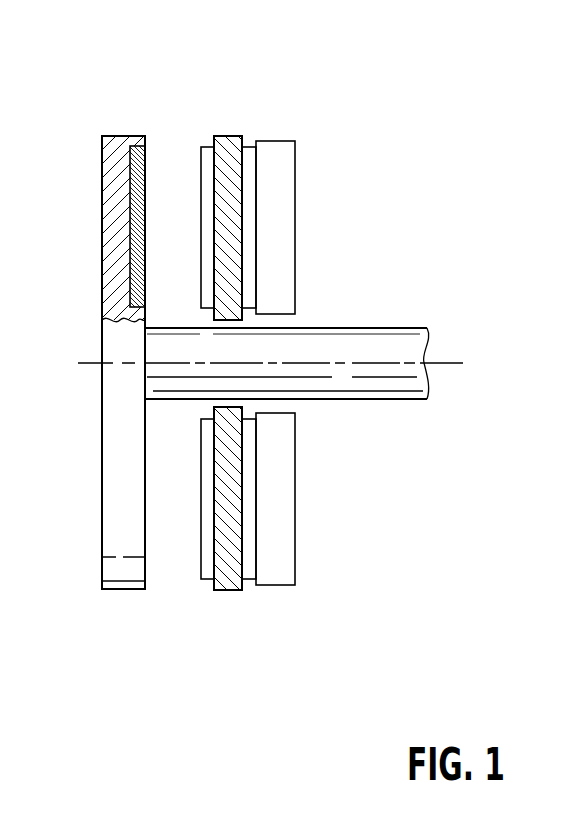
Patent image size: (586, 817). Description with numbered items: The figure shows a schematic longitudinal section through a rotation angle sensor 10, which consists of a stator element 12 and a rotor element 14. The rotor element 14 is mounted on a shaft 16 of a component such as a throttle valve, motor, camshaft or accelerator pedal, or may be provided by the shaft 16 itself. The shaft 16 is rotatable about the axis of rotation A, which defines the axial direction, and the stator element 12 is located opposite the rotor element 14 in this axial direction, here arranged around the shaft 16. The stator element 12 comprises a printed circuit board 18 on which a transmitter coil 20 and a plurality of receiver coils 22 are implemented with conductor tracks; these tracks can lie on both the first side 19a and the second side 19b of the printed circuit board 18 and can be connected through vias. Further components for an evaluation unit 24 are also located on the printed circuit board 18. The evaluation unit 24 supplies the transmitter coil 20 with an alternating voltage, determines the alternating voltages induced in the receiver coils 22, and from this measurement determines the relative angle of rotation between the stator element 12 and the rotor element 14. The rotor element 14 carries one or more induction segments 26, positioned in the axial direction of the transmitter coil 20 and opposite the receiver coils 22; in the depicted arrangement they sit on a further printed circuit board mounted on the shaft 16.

The rotation angle sensor 10 is at (316, 187).
The stator element 12 is at (241, 128).
The rotor element 14 is at (113, 128).
The shaft 16 is at (381, 348).
The printed circuit board 18 is at (224, 153).
The first side 19a is at (203, 458).
The second side 19b is at (213, 458).
The transmitter coil 20 is at (250, 163).
The receiver coils 22 is at (201, 163).
The evaluation unit 24 is at (295, 225).
The induction segments 26 is at (130, 228).
The axis of rotation A is at (447, 366).